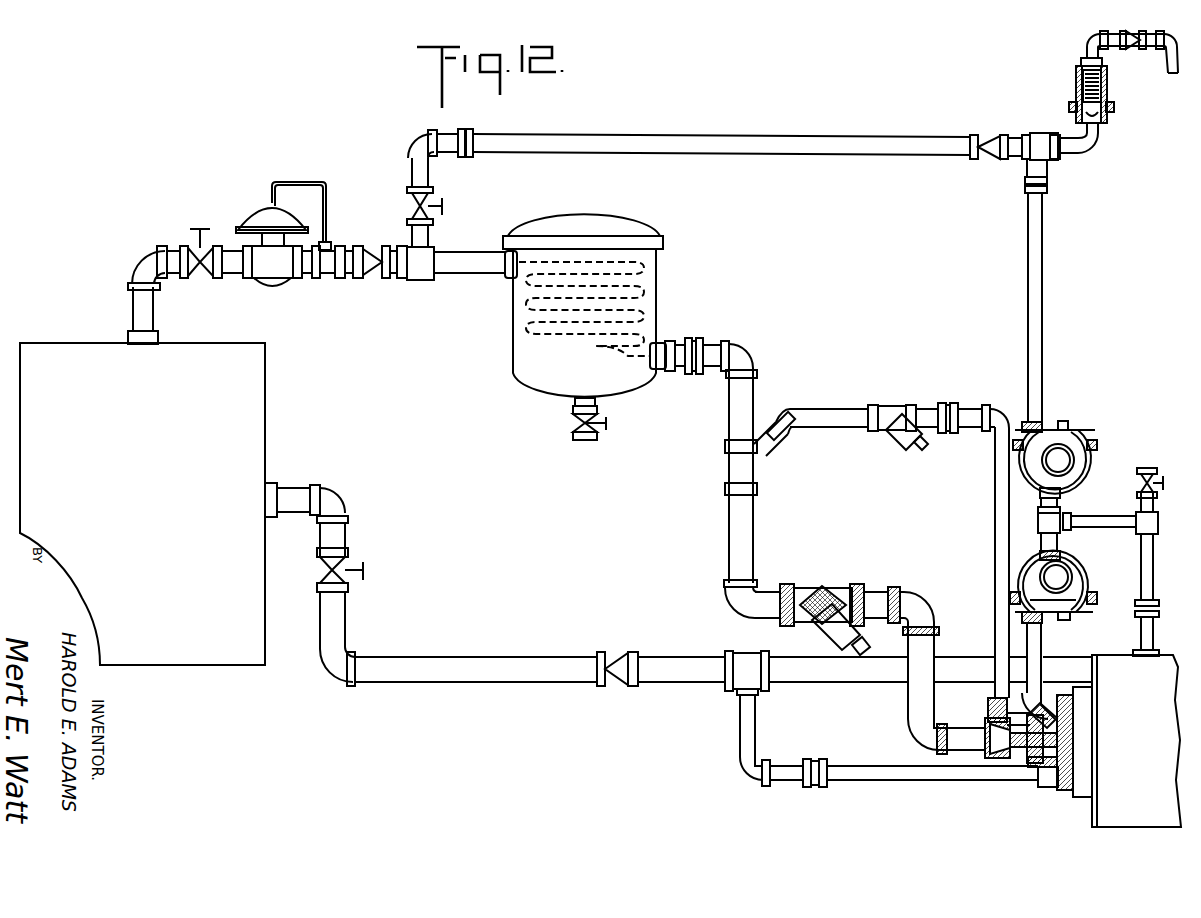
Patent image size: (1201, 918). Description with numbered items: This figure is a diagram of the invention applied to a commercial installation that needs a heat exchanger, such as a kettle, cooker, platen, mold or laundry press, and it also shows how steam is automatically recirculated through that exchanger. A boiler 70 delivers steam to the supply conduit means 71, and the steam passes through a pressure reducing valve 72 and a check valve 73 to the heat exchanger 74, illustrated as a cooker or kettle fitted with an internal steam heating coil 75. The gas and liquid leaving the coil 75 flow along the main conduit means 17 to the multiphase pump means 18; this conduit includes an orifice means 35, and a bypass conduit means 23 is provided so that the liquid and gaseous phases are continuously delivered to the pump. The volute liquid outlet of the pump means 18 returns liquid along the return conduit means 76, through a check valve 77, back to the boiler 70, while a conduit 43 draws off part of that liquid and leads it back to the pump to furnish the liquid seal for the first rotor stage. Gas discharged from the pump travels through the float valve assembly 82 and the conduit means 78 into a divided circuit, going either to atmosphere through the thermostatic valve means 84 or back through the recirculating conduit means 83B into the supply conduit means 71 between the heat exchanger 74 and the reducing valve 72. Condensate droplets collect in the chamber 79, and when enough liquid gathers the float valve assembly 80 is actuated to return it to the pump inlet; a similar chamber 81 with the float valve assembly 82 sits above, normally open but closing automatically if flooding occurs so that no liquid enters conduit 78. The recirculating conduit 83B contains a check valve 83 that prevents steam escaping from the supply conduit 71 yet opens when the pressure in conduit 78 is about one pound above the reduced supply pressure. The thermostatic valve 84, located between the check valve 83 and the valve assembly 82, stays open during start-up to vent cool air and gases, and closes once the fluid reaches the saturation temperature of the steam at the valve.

The main conduit means 17 is at (726, 503).
The multiphase pump means 18 is at (1050, 792).
The bypass conduit means 23 is at (846, 404).
The orifice means 35 is at (1015, 762).
The conduit 43 is at (870, 777).
The boiler 70 is at (134, 507).
The supply conduit means 71 is at (463, 284).
The pressure reducing valve 72 is at (270, 271).
The check valve 73 is at (372, 256).
The heat exchanger 74 is at (510, 351).
The internal steam heating coil 75 is at (640, 302).
The return conduit means 76 is at (670, 668).
The check valve 77 is at (622, 686).
The conduit means 78 is at (1034, 254).
The chamber 79 is at (1076, 588).
The float valve assembly 80 is at (1059, 578).
The chamber 81 is at (1082, 460).
The float valve assembly 82 is at (1061, 456).
The check valve 83 is at (990, 161).
The recirculating conduit means 83B is at (735, 118).
The thermostatic valve means 84 is at (1069, 82).